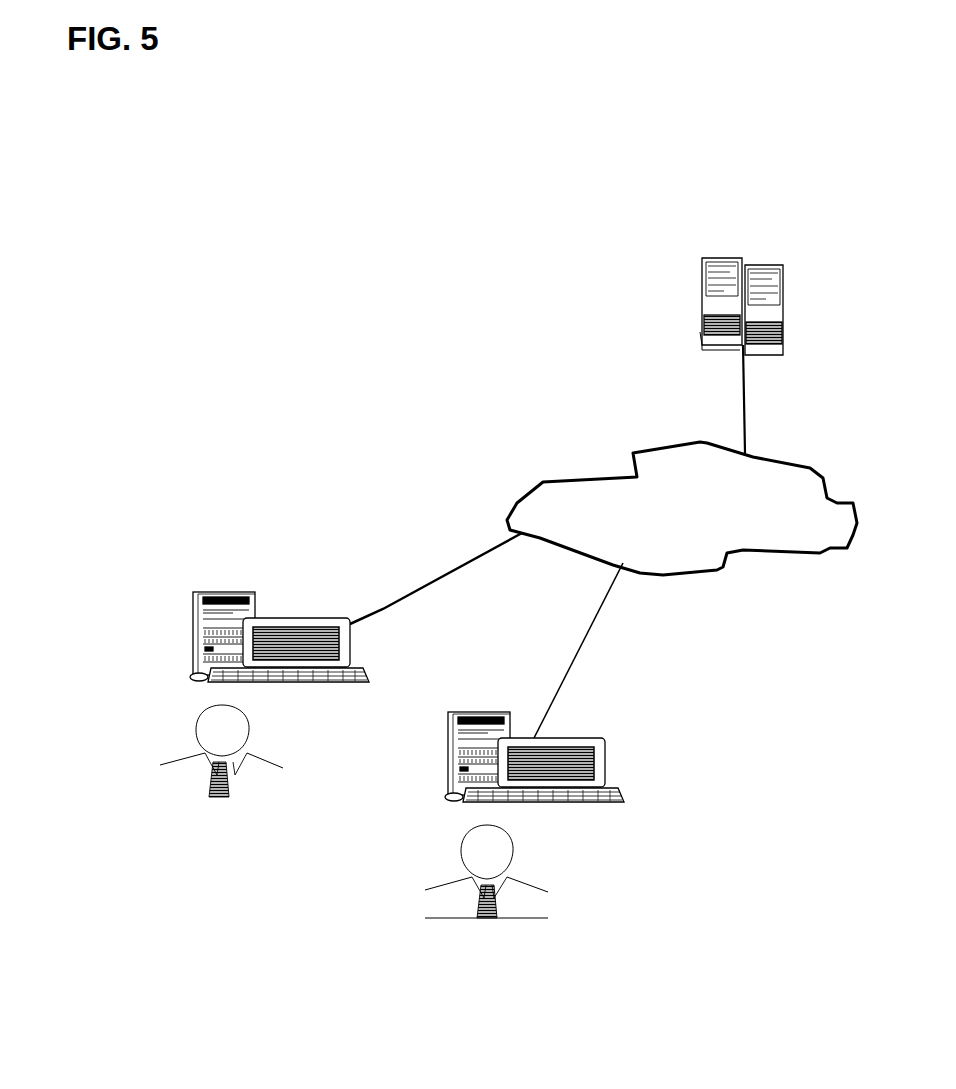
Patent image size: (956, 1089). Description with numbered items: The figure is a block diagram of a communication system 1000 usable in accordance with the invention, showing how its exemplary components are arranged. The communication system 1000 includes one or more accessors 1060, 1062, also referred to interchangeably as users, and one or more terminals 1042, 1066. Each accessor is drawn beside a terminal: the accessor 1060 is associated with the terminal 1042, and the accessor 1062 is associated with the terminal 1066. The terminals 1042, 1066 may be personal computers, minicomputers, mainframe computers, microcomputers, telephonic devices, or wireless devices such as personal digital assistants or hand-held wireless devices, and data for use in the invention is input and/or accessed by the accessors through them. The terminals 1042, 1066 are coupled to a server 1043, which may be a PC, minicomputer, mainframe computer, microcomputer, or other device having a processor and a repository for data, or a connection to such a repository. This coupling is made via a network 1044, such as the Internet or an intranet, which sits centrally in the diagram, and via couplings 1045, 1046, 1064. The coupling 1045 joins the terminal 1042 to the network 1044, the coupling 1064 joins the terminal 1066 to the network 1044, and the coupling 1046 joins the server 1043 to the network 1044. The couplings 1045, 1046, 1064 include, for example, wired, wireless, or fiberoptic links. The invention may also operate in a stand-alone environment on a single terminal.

The communication system 1000 is at (307, 286).
The terminal 1042 is at (200, 595).
The server 1043 is at (778, 267).
The network 1044 is at (632, 467).
The coupling 1045 is at (395, 548).
The coupling 1046 is at (740, 390).
The accessor 1060 is at (182, 757).
The accessor 1062 is at (550, 897).
The coupling 1064 is at (585, 640).
The terminal 1066 is at (605, 763).